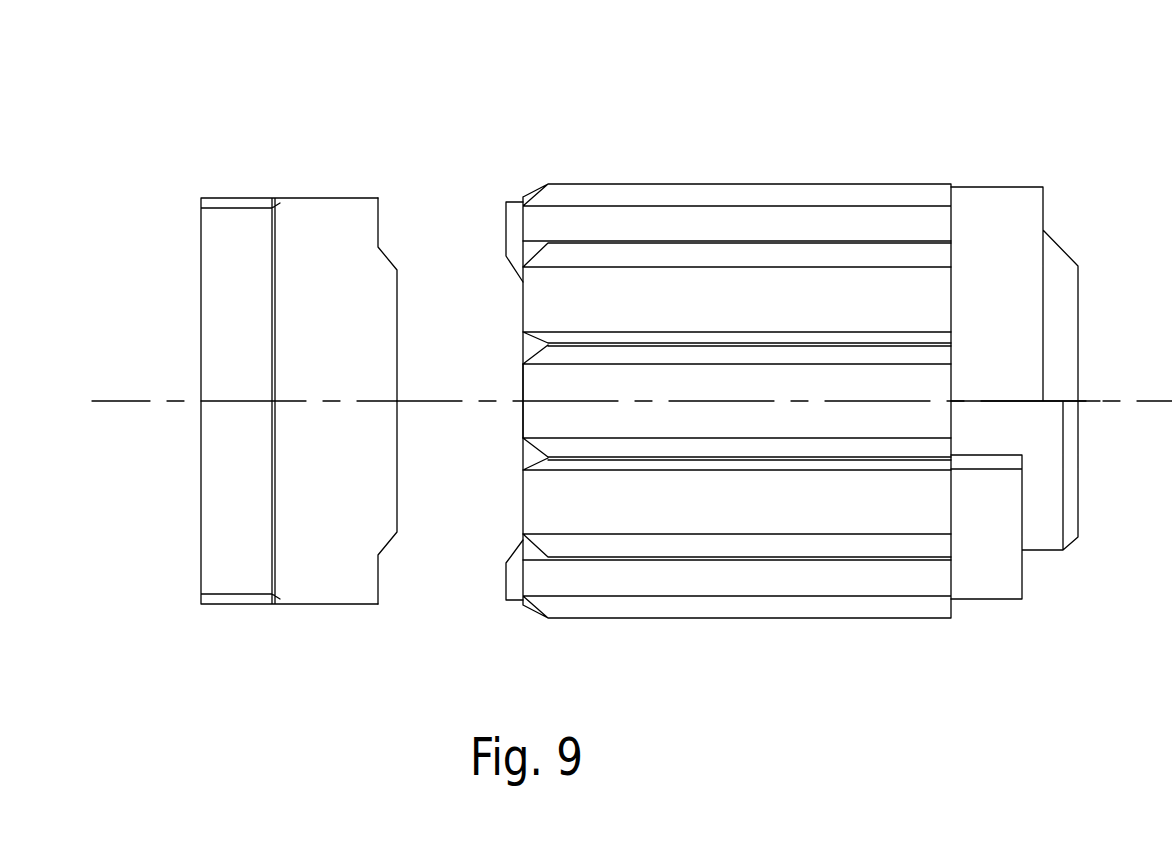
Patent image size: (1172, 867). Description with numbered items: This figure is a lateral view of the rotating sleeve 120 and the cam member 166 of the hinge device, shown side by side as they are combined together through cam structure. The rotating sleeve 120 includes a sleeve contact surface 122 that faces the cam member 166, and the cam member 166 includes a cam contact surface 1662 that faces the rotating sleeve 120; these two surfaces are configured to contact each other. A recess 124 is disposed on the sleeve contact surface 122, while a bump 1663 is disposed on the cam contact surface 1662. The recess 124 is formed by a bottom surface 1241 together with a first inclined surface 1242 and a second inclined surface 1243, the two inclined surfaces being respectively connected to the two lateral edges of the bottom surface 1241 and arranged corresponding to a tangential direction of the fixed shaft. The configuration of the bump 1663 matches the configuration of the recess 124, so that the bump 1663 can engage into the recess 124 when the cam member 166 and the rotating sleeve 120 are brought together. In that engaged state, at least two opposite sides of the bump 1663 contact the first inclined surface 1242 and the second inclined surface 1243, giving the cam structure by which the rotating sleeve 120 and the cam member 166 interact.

The rotating sleeve 120 is at (758, 347).
The sleeve contact surface 122 is at (504, 584).
The recess 124 is at (684, 337).
The bottom surface 1241 is at (523, 426).
The first inclined surface 1242 is at (697, 514).
The second inclined surface 1243 is at (505, 267).
The cam member 166 is at (340, 372).
The cam contact surface 1662 is at (380, 216).
The bump 1663 is at (397, 463).